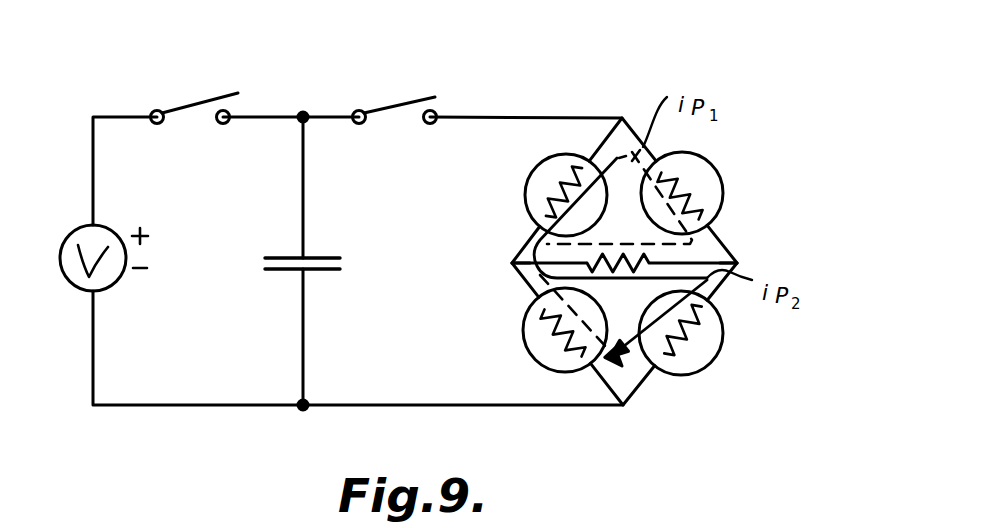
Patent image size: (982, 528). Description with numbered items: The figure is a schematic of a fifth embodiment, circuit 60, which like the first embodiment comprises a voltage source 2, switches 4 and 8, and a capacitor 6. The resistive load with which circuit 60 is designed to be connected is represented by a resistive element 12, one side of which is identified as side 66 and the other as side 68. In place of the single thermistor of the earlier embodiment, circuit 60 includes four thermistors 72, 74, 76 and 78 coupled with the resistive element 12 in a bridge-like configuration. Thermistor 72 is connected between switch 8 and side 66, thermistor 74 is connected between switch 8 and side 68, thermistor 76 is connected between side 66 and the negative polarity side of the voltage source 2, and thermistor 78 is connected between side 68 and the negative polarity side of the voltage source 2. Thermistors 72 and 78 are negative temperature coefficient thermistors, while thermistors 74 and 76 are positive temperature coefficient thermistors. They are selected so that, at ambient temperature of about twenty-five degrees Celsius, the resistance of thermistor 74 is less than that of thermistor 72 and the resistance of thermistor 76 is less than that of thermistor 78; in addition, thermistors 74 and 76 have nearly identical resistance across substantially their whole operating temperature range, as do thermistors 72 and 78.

The voltage source 2 is at (70, 235).
The switch 4 is at (193, 104).
The capacitor 6 is at (278, 257).
The switch 8 is at (390, 108).
The resistive element 12 is at (540, 240).
The circuit 60 is at (622, 78).
The side of resistive element 66 is at (510, 265).
The side of resistive element 68 is at (740, 263).
The thermistor 72 is at (557, 153).
The thermistor 74 is at (682, 152).
The thermistor 76 is at (572, 372).
The thermistor 78 is at (690, 374).